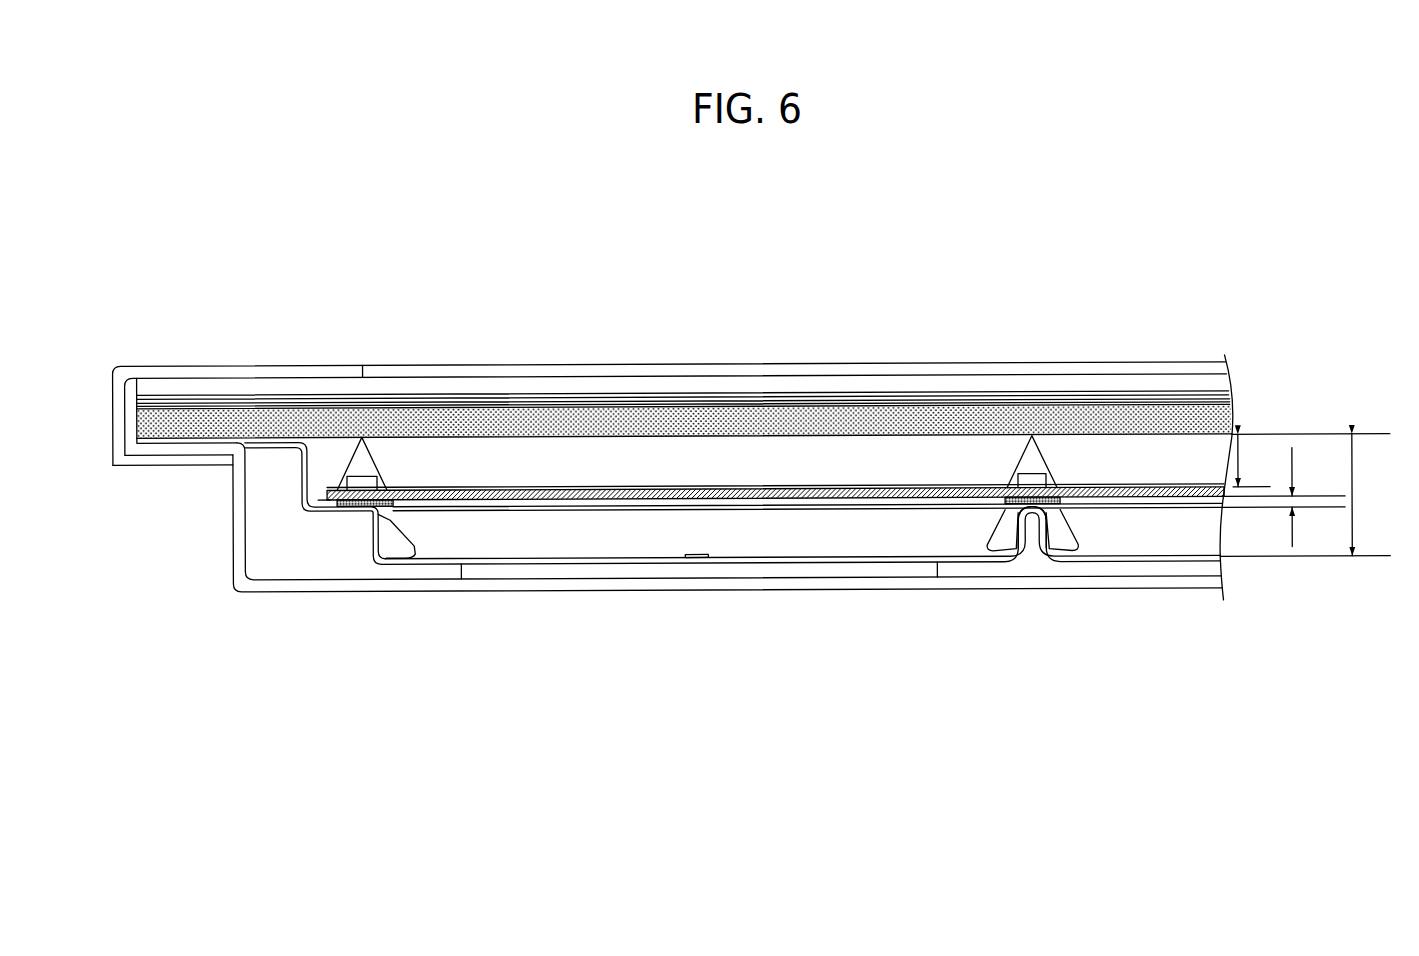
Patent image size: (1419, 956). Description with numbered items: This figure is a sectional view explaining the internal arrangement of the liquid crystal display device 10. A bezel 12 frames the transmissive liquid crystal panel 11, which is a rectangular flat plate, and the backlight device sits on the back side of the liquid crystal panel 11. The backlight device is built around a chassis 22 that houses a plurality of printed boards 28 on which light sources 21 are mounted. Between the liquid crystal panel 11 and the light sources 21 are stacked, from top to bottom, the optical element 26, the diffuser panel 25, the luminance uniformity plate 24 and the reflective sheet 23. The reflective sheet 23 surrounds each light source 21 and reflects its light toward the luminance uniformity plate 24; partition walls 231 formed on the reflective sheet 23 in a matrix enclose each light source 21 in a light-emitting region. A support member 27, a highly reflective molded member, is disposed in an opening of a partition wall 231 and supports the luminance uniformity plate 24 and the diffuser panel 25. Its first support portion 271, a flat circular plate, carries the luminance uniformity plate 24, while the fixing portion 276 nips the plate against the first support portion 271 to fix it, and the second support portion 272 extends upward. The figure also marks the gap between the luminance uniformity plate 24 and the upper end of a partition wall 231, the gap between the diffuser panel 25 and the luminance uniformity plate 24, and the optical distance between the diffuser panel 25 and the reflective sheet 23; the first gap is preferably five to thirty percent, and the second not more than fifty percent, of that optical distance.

The liquid crystal display device 10 is at (721, 253).
The liquid crystal panel 11 is at (315, 391).
The bezel 12 is at (172, 363).
The light source 21 is at (695, 562).
The chassis 22 is at (236, 543).
The reflective sheet 23 is at (372, 546).
The partition wall 231 is at (625, 537).
The luminance uniformity plate 24 is at (723, 488).
The diffuser panel 25 is at (870, 419).
The optical element 26 is at (932, 396).
The support member 27 is at (1032, 474).
The first support portion 271 is at (1048, 514).
The second support portion 272 is at (1038, 486).
The fixing portion 276 is at (1048, 483).
The printed board 28 is at (885, 569).